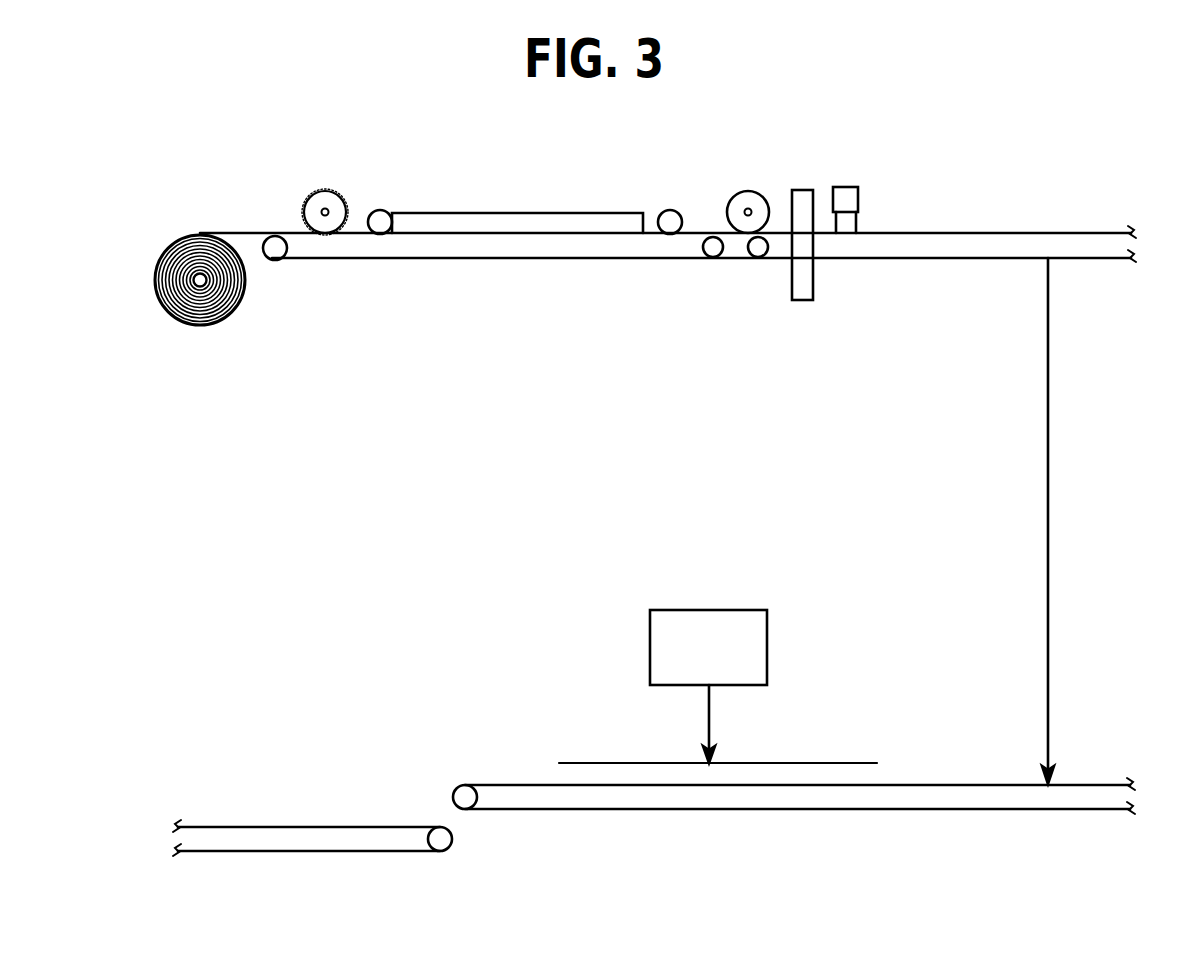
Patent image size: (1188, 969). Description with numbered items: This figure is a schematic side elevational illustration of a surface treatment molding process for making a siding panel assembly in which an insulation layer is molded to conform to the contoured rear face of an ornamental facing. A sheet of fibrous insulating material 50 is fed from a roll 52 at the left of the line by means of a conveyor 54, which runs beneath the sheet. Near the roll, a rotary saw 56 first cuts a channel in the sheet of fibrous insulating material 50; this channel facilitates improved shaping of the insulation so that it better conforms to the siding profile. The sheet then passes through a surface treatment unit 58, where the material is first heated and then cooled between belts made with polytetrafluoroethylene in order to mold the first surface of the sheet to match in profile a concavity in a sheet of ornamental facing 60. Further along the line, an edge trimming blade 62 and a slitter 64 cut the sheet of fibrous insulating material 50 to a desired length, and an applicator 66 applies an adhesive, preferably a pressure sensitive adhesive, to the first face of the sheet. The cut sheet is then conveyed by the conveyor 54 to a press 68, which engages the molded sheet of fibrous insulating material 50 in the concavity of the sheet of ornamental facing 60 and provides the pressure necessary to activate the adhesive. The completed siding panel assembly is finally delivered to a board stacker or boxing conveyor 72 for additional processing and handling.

The sheet of fibrous insulating material 50 is at (247, 233).
The roll 52 is at (239, 297).
The conveyor 54 is at (512, 260).
The rotary saw 56 is at (335, 196).
The coating station 58 is at (533, 212).
The sheet of ornamental facing 60 is at (807, 762).
The edge trimming blade 62 is at (750, 197).
The slitter 64 is at (814, 278).
The applicator 66 is at (845, 192).
The press 68 is at (762, 640).
The board stacker or boxing conveyor 72 is at (303, 853).